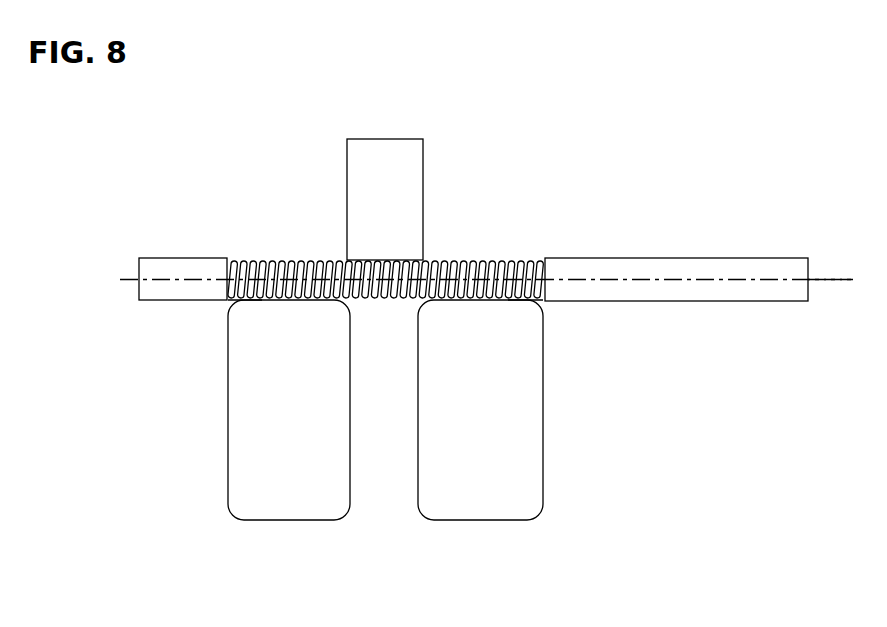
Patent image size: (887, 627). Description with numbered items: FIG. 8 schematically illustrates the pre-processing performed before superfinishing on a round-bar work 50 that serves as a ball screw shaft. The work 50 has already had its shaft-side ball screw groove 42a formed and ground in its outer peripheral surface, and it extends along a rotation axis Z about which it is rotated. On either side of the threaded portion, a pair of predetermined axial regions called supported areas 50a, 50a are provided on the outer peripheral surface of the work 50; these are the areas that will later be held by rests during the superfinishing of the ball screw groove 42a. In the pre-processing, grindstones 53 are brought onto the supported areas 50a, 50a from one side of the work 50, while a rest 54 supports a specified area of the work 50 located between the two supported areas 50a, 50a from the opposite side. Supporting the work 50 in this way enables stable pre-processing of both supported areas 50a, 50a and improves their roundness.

The work 50 is at (666, 247).
The shaft-side ball screw groove 42a is at (248, 262).
The rest 54 is at (393, 139).
The grindstones 53 is at (287, 520).
The supported areas 50a is at (263, 302).
The axis Z is at (838, 277).